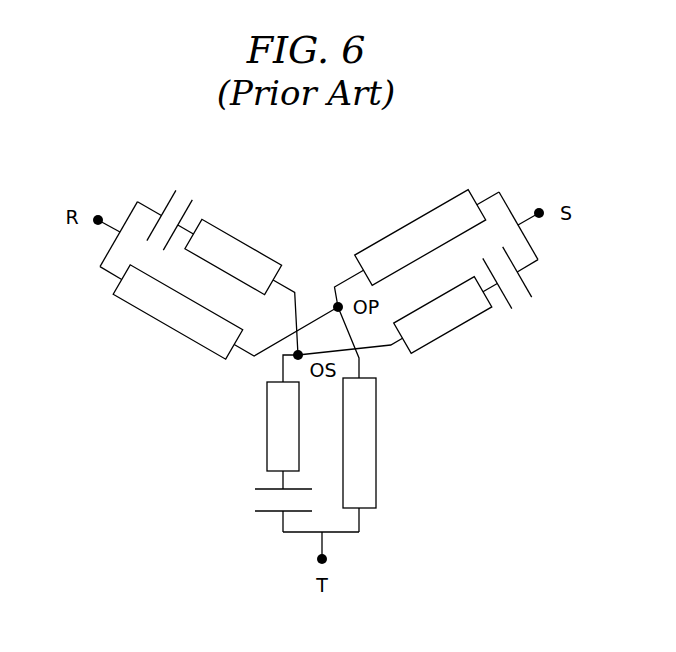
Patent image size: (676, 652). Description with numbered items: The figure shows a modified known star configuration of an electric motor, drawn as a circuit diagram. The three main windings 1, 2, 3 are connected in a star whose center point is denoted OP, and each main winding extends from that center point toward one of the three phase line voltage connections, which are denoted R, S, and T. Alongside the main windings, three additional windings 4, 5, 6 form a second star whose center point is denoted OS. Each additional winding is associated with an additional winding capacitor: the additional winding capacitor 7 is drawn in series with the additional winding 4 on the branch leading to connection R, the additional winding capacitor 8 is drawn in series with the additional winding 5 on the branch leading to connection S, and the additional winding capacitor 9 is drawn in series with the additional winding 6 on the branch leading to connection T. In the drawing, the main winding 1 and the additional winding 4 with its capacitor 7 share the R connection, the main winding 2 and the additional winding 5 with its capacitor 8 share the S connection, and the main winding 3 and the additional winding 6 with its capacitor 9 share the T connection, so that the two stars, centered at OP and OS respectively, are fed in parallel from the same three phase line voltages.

The main winding 1 is at (178, 312).
The main winding 2 is at (420, 238).
The main winding 3 is at (375, 443).
The additional winding 4 is at (233, 254).
The additional winding 5 is at (443, 316).
The additional winding 6 is at (268, 426).
The additional winding capacitor 7 is at (178, 212).
The additional winding capacitor 8 is at (514, 286).
The additional winding capacitor 9 is at (268, 500).